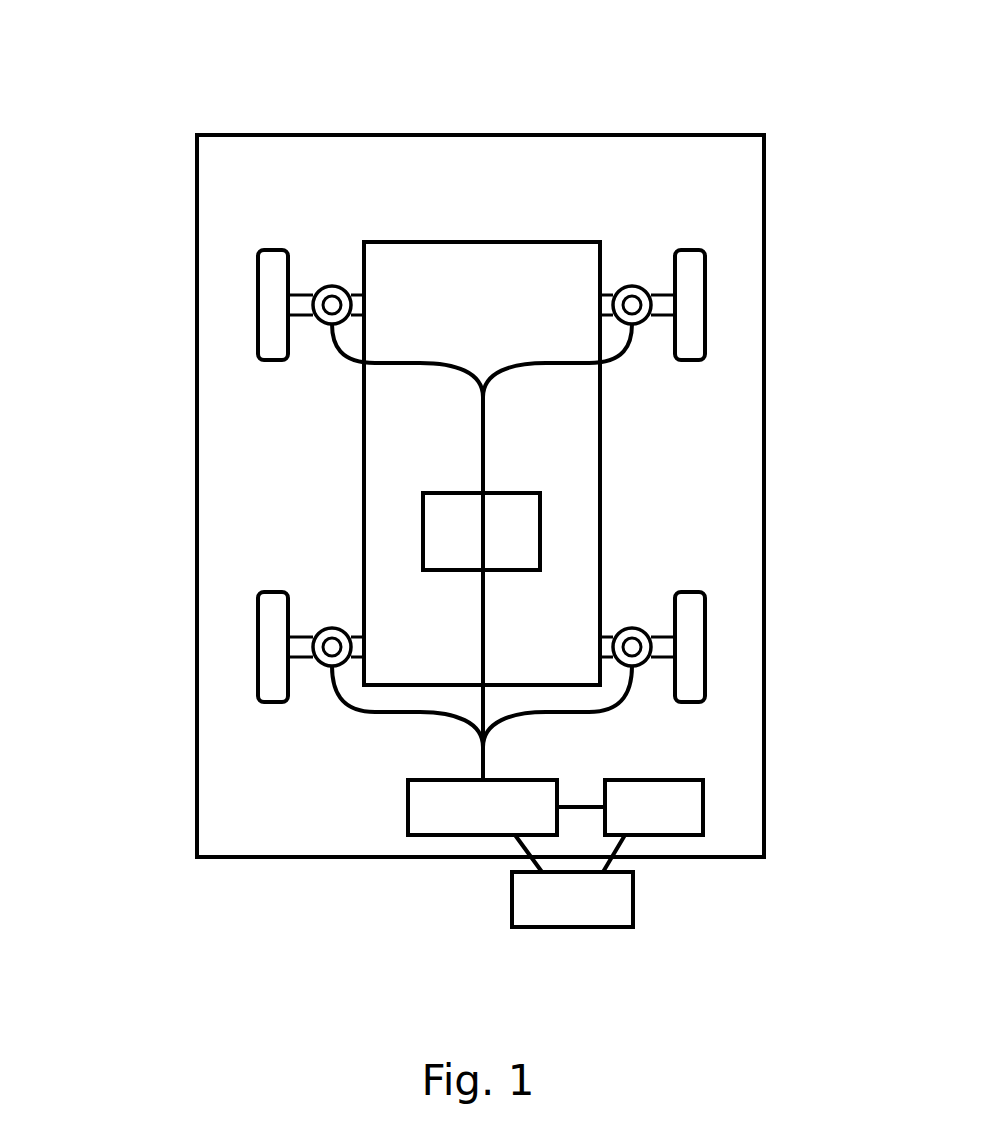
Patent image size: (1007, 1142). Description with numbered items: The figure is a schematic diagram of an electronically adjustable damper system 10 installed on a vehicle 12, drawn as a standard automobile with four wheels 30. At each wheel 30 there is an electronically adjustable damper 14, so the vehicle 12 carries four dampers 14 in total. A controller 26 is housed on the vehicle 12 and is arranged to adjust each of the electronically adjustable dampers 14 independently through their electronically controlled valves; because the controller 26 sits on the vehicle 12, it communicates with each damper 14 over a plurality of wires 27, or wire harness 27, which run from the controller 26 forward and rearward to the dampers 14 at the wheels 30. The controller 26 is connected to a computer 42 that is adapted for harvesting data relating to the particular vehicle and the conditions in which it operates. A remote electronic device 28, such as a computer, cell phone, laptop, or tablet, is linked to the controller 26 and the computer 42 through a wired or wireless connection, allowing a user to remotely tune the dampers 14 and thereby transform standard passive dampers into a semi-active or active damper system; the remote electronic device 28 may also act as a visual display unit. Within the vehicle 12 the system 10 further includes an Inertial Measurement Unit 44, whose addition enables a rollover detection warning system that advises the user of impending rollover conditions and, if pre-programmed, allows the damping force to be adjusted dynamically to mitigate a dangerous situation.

The electronically adjustable damper system 10 is at (538, 80).
The vehicle 12 is at (243, 684).
The electronically adjustable damper 14 is at (327, 287).
The controller 26 is at (482, 807).
The wires 27 is at (395, 368).
The remote electronic device 28 is at (572, 881).
The wheel 30 is at (258, 284).
The computer 42 is at (630, 807).
The Inertial Measurement Unit 44 is at (481, 531).